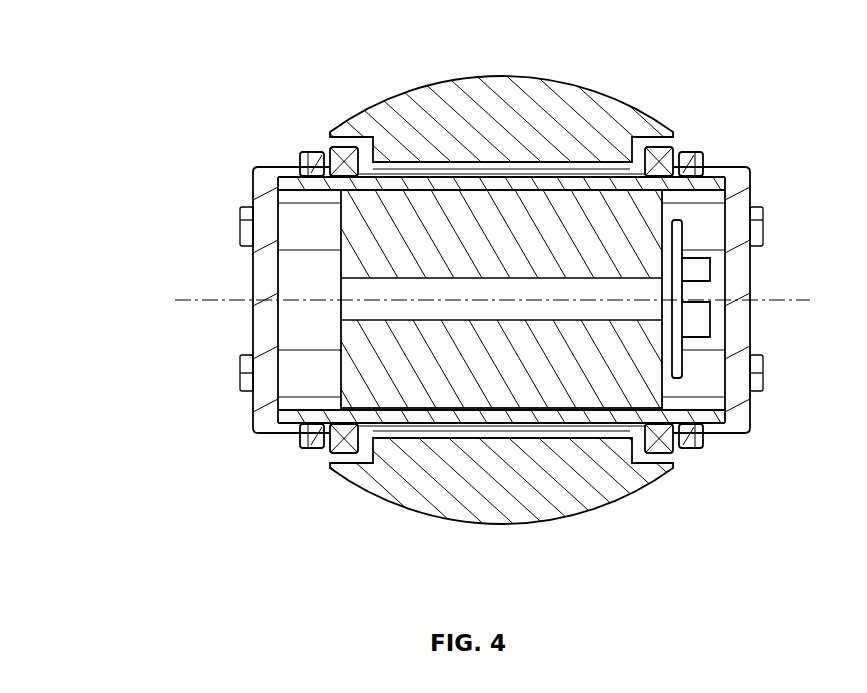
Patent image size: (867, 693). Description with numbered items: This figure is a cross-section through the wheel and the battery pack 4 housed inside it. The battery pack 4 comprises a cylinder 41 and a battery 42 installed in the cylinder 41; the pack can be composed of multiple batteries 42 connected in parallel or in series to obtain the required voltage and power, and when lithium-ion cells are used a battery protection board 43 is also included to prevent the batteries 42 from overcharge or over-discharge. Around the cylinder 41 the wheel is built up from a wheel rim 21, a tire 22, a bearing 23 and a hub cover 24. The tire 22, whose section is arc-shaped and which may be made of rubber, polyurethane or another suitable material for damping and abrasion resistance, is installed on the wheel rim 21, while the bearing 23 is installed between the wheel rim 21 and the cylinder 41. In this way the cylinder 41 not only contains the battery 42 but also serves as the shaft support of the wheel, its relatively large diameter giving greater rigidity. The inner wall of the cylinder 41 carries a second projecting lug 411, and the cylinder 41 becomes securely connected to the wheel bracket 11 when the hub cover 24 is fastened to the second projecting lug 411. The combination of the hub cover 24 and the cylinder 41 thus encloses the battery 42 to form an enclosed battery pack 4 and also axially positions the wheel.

The battery pack 4 is at (425, 229).
The cylinder 41 is at (500, 190).
The second projecting lug 411 is at (298, 215).
The battery 42 is at (413, 367).
The battery protection board 43 is at (690, 267).
The wheel bracket 11 is at (314, 157).
The wheel rim 21 is at (438, 487).
The tire 22 is at (478, 432).
The bearing 23 is at (340, 453).
The hub cover 24 is at (284, 434).